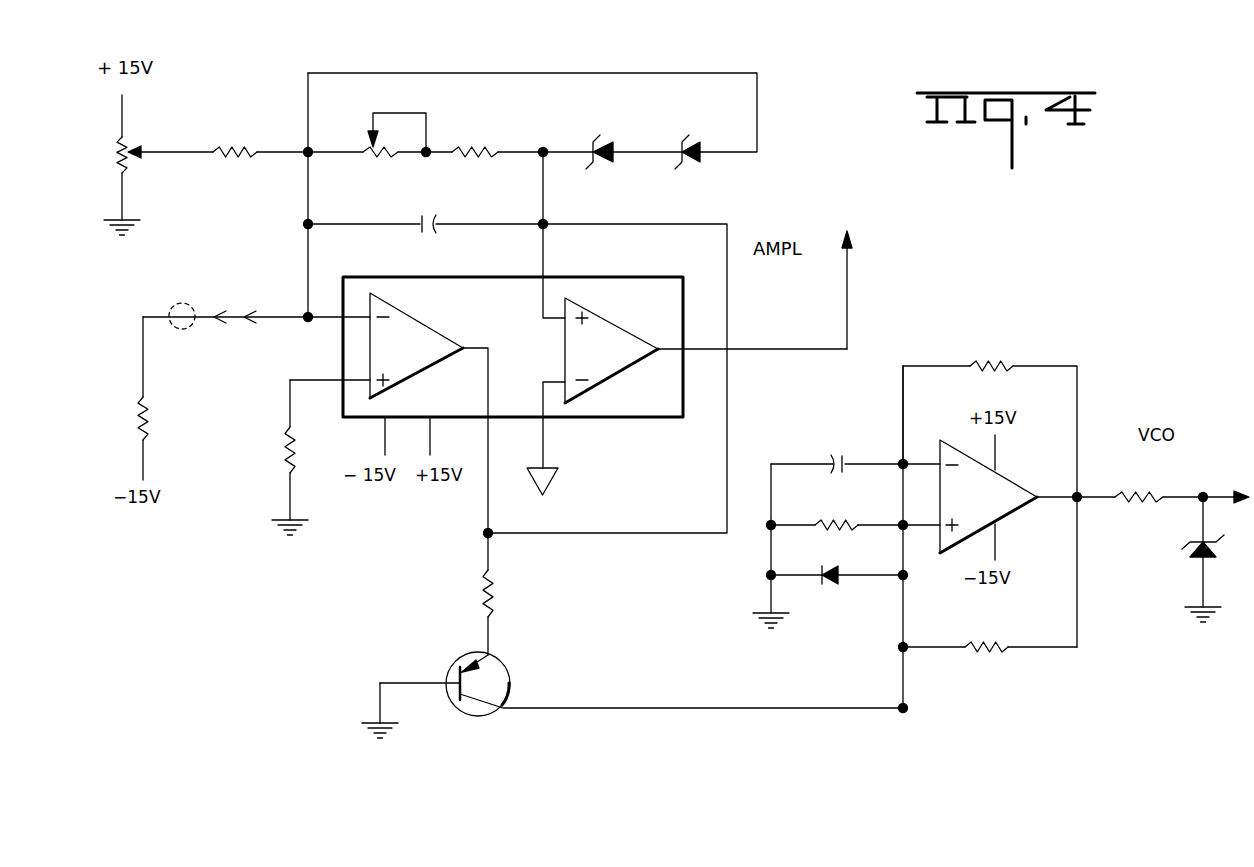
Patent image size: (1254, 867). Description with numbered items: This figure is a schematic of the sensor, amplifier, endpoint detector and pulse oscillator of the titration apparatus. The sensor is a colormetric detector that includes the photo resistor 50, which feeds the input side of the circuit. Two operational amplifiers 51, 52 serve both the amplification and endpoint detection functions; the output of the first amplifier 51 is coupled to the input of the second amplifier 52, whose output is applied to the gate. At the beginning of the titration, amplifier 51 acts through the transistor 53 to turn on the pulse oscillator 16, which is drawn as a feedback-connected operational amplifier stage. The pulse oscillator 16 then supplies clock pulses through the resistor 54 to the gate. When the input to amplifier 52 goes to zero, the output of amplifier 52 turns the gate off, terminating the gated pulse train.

The pulse oscillator 16 is at (978, 643).
The photo resistor 50 is at (147, 411).
The operational amplifier 51 is at (421, 324).
The operational amplifier 52 is at (622, 330).
The transistor 53 is at (509, 672).
The resistor 54 is at (1141, 490).